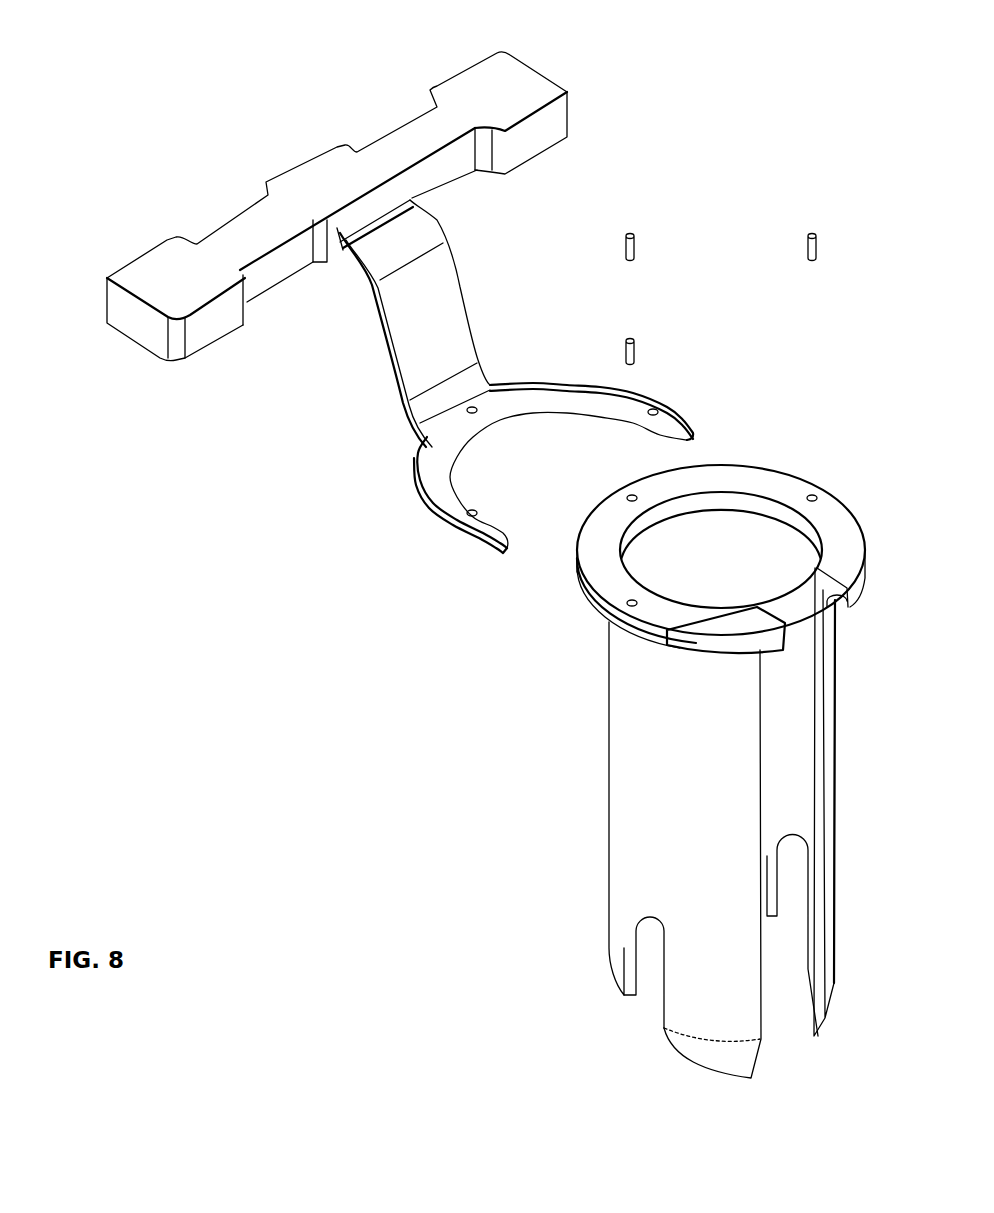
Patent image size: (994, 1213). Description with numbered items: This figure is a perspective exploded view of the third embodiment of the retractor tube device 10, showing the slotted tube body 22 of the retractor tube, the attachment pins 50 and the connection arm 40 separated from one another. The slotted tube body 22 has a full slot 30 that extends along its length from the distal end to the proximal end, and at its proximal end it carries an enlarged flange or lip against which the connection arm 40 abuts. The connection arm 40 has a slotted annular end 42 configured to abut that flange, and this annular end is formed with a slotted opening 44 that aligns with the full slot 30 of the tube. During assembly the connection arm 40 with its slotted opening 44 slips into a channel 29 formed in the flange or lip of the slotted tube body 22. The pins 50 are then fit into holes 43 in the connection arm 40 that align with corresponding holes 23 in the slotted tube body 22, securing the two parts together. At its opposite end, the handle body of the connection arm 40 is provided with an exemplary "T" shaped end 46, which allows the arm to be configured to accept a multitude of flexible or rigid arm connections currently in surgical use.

The retractor tube device 10 is at (146, 93).
The "T" shaped end 46 is at (170, 253).
The connection arm 40 is at (372, 347).
The slotted annular end 42 is at (428, 470).
The holes 43 is at (470, 518).
The pins 50 is at (640, 230).
The slotted tube body 22 is at (632, 803).
The slotted opening 44 is at (580, 465).
The holes 23 is at (815, 497).
The channel 29 is at (587, 602).
The full slot 30 is at (806, 734).